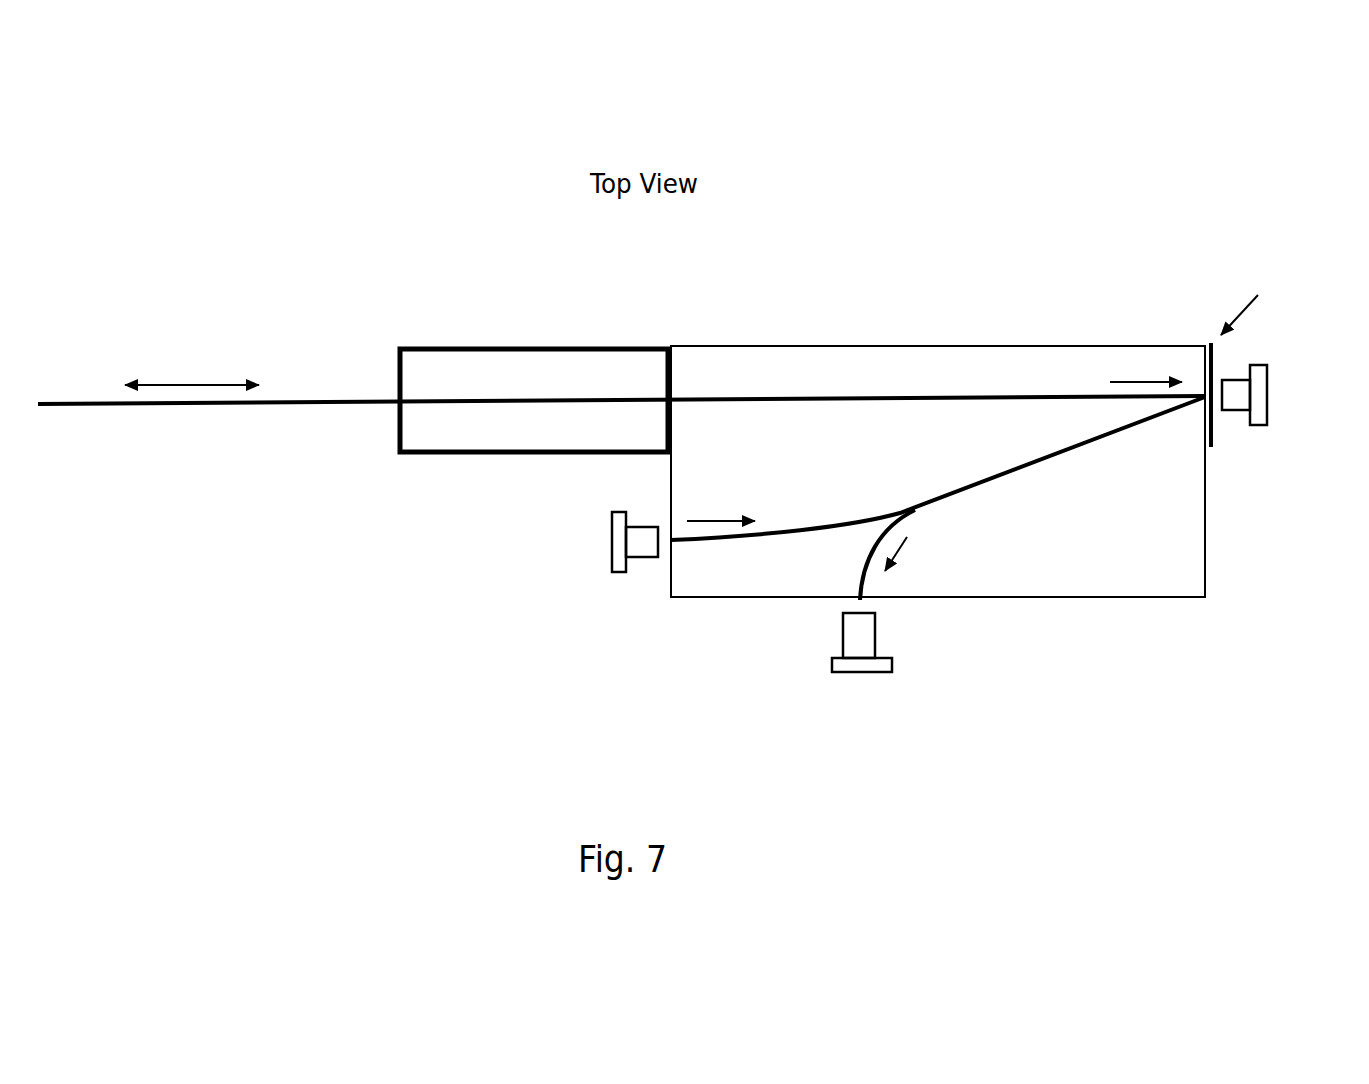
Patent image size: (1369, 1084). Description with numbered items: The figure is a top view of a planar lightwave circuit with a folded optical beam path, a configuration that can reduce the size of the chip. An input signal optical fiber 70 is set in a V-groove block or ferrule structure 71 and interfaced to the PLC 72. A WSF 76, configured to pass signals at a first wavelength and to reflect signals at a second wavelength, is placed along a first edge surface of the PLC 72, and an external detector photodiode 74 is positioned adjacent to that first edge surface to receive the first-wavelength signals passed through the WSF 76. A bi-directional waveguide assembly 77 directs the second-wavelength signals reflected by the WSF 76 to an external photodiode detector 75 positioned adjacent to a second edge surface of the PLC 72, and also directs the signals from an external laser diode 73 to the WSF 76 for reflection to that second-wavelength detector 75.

The input signal optical fiber 70 is at (260, 403).
The V-groove block or ferrule structure 71 is at (397, 433).
The PLC 72 is at (1057, 557).
The external laser diode 73 is at (598, 542).
The external detector photodiode 74 is at (1250, 425).
The external photodiode detector 75 is at (877, 657).
The WSF 76 is at (1212, 447).
The bi-directional waveguide assembly 77 is at (1073, 455).